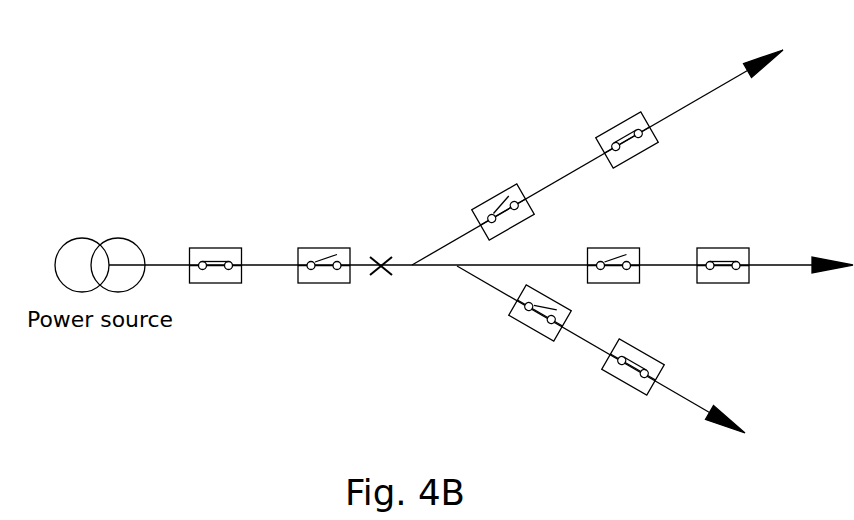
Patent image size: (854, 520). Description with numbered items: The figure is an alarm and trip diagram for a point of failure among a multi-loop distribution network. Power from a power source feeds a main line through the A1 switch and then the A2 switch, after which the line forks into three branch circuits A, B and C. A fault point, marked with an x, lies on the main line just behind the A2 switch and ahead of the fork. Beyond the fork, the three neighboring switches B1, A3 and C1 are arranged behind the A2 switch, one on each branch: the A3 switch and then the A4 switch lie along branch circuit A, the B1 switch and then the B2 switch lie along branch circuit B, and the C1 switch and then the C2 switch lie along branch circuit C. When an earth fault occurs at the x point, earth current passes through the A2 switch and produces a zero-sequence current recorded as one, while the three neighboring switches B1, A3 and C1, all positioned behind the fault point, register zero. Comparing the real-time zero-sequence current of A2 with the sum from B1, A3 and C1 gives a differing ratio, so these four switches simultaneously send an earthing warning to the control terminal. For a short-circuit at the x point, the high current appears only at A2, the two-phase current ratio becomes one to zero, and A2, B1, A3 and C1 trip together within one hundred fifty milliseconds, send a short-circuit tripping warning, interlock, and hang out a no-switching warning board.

The A1 switch A1 is at (216, 245).
The A2 switch A2 is at (324, 245).
The A3 switch A3 is at (614, 245).
The A4 switch A4 is at (723, 245).
The branch circuit A is at (632, 240).
The B1 switch B1 is at (533, 328).
The B2 switch B2 is at (629, 383).
The branch circuit B is at (601, 368).
The C1 switch C1 is at (496, 195).
The C2 switch C2 is at (621, 124).
The branch circuit C is at (597, 137).